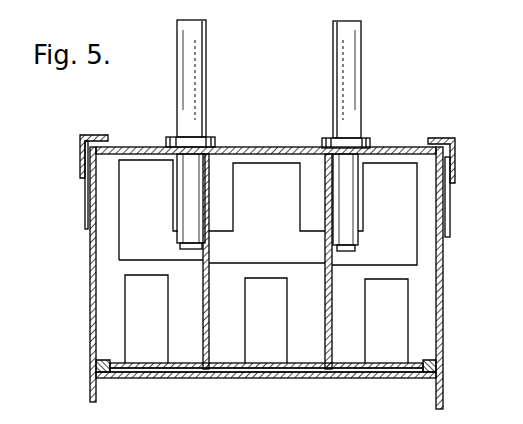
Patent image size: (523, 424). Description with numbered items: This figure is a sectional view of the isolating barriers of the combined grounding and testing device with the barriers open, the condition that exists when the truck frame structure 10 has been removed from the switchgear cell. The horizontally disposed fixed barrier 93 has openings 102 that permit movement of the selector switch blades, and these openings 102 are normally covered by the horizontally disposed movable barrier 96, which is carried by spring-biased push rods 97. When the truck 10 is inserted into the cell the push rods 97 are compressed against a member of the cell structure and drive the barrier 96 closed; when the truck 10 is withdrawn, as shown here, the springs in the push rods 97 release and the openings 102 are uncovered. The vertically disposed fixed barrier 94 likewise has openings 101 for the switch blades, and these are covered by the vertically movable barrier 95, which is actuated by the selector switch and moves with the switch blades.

The truck frame structure 10 is at (90, 266).
The horizontally disposed fixed barrier 93 is at (427, 312).
The vertically disposed fixed barrier 94 is at (327, 373).
The vertically disposed barrier 95 is at (313, 372).
The horizontally disposed barrier 96 is at (407, 253).
The push rods 97 is at (236, 67).
The openings 101 is at (155, 375).
The openings 102 is at (133, 306).